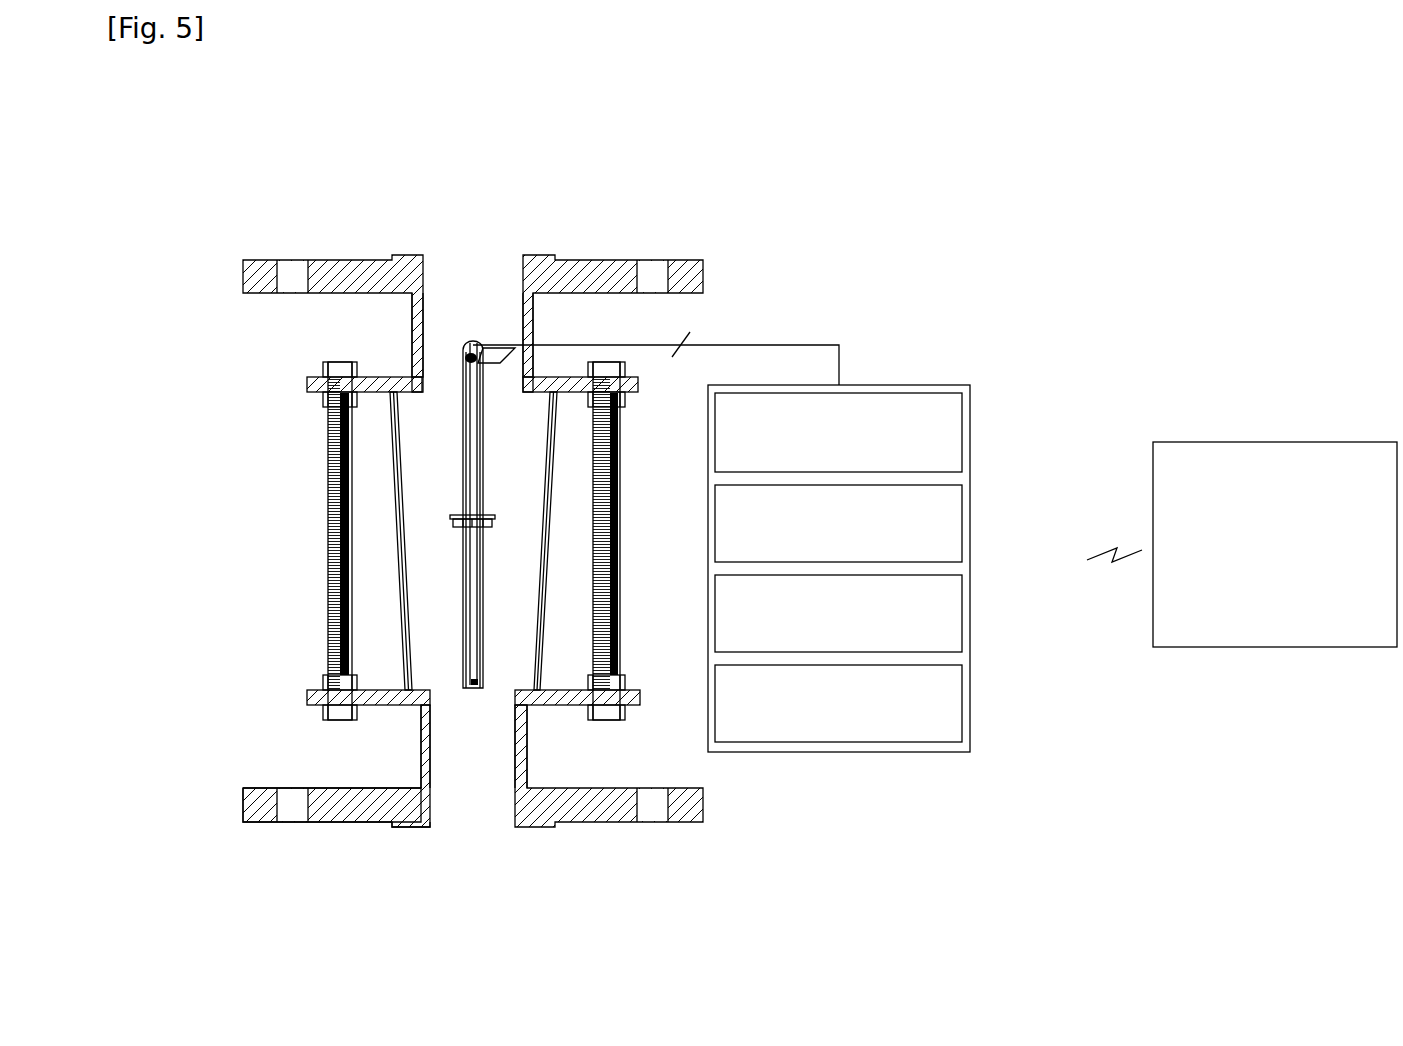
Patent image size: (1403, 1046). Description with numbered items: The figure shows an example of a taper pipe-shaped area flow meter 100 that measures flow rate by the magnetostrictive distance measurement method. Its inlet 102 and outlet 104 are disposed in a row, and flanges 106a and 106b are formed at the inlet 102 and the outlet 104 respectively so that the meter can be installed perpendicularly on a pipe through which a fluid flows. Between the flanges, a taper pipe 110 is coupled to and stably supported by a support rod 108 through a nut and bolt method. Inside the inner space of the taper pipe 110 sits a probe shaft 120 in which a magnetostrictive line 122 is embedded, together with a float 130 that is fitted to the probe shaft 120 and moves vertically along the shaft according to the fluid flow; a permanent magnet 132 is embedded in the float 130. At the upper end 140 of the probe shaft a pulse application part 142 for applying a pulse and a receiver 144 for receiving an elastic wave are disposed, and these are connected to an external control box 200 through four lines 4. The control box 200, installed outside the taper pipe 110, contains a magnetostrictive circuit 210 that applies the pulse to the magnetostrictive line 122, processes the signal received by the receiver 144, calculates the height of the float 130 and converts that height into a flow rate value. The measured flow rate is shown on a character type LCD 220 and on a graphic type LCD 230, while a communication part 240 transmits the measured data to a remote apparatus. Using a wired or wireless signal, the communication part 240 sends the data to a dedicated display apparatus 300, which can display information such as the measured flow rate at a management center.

The taper pipe-shaped area flow meter 100 is at (500, 95).
The inlet 102 is at (457, 817).
The outlet 104 is at (488, 267).
The flange 106a is at (243, 802).
The flange 106b is at (258, 260).
The support rod 108 is at (330, 483).
The taper pipe 110 is at (395, 620).
The probe shaft 120 is at (463, 628).
The magnetostrictive line 122 is at (470, 450).
The float 130 is at (450, 517).
The permanent magnet 132 is at (450, 523).
The upper end 140 is at (463, 357).
The pulse application part 142 is at (763, 343).
The receiver 144 is at (460, 362).
The lines 4 is at (673, 332).
The control box 200 is at (893, 523).
The magnetostrictive circuit 210 is at (962, 433).
The character type LCD 220 is at (962, 523).
The graphic type LCD 230 is at (962, 613).
The communication part 240 is at (962, 703).
The dedicated display apparatus 300 is at (1298, 440).